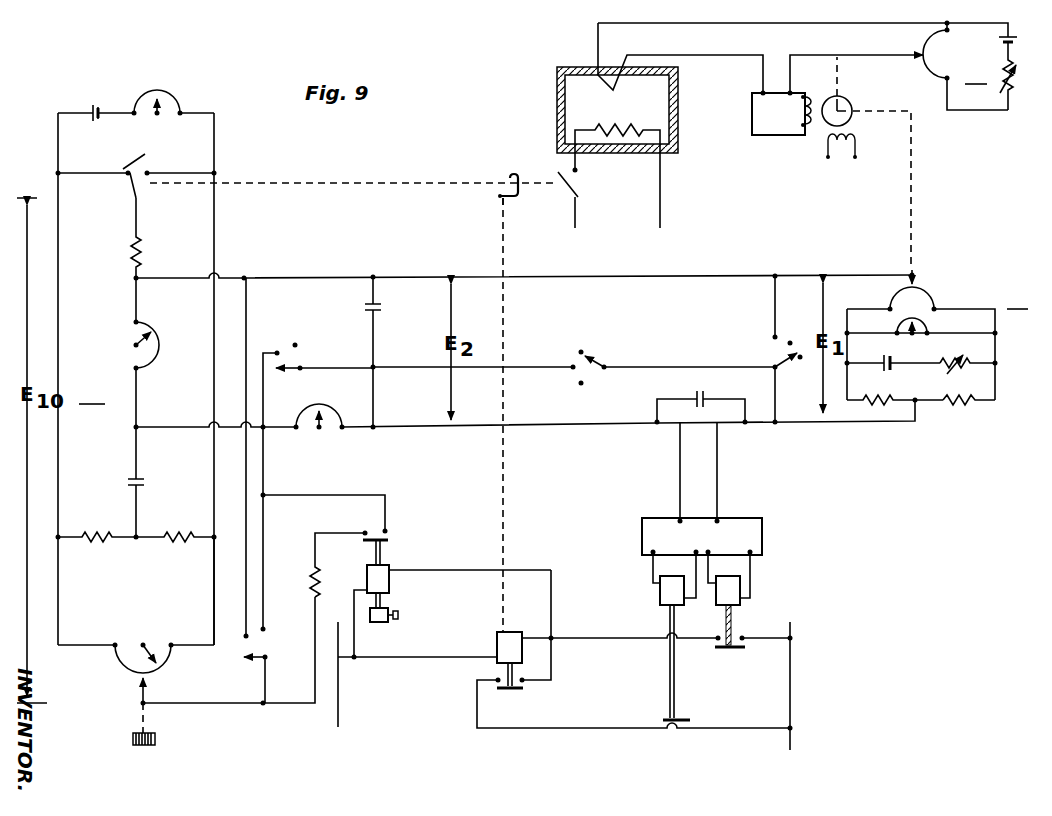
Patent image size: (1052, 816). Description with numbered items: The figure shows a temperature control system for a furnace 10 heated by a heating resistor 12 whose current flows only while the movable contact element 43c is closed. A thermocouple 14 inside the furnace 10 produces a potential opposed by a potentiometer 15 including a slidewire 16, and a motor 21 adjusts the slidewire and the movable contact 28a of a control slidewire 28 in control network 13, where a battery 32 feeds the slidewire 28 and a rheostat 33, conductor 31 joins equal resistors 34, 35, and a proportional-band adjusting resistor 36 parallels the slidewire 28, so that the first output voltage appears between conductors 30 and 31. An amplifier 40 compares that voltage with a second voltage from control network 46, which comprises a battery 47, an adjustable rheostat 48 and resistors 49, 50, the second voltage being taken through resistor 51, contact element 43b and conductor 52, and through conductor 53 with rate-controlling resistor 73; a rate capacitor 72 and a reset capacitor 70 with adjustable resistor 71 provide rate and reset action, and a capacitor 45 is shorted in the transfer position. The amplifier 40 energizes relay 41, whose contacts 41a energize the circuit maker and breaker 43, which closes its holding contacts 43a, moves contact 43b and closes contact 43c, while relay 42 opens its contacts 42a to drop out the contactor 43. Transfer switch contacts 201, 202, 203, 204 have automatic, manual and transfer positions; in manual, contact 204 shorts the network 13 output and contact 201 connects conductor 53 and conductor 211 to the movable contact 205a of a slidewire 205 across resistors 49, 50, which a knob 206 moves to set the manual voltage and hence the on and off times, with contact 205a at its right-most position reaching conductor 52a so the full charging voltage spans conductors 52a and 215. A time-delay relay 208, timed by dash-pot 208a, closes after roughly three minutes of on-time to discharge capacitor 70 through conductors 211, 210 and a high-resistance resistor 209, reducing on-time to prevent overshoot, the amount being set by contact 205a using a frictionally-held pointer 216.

The furnace 10 is at (575, 112).
The heating resistor 12 is at (603, 128).
The control network 13 is at (940, 343).
The thermocouple 14 is at (611, 89).
The potentiometer 15 is at (982, 66).
The slidewire 16 is at (930, 40).
The motor 21 is at (852, 118).
The control slidewire 28 is at (933, 295).
The movable contact 28a is at (917, 278).
The conductor 30 is at (668, 275).
The conductor 31 is at (797, 423).
The battery 32 is at (888, 357).
The rheostat 33 is at (964, 360).
The resistor 34 is at (889, 398).
The resistor 35 is at (958, 402).
The proportional-band adjusting resistor 36 is at (930, 330).
The amplifier 40 is at (762, 530).
The relay 41 is at (738, 588).
The contacts of relay 41 41a is at (728, 652).
The relay 42 is at (660, 595).
The contacts of relay 42 42a is at (676, 724).
The circuit maker and breaker 43 is at (497, 642).
The holding contacts 43a is at (512, 690).
The contact element 43b is at (140, 162).
The movable contact element 43c is at (574, 186).
The capacitor 45 is at (704, 396).
The control network 46 is at (93, 393).
The battery 47 is at (94, 104).
The adjustable rheostat 48 is at (173, 92).
The resistor 49 is at (97, 542).
The resistor 50 is at (183, 542).
The resistor 51 is at (142, 253).
The conductor 52 is at (58, 300).
The conductor 52a is at (216, 568).
The conductor 53 is at (607, 425).
The capacitor 70 is at (148, 482).
The adjustable resistor 71 is at (161, 354).
The rate capacitor 72 is at (385, 308).
The rate-controlling resistor 73 is at (339, 415).
The transfer switch contact 201 is at (257, 661).
The transfer switch contact 202 is at (292, 375).
The transfer switch contact 203 is at (593, 357).
The transfer switch contact 204 is at (787, 370).
The slidewire 205 is at (128, 668).
The movable contact 205a is at (148, 686).
The knob 206 is at (152, 745).
The time-delay relay 208 is at (367, 570).
The dash-pot 208a is at (375, 621).
The high-resistance resistor 209 is at (310, 592).
The conductor 210 is at (337, 495).
The conductor 211 is at (264, 477).
The conductor 215 is at (220, 705).
The pointer 216 is at (146, 644).